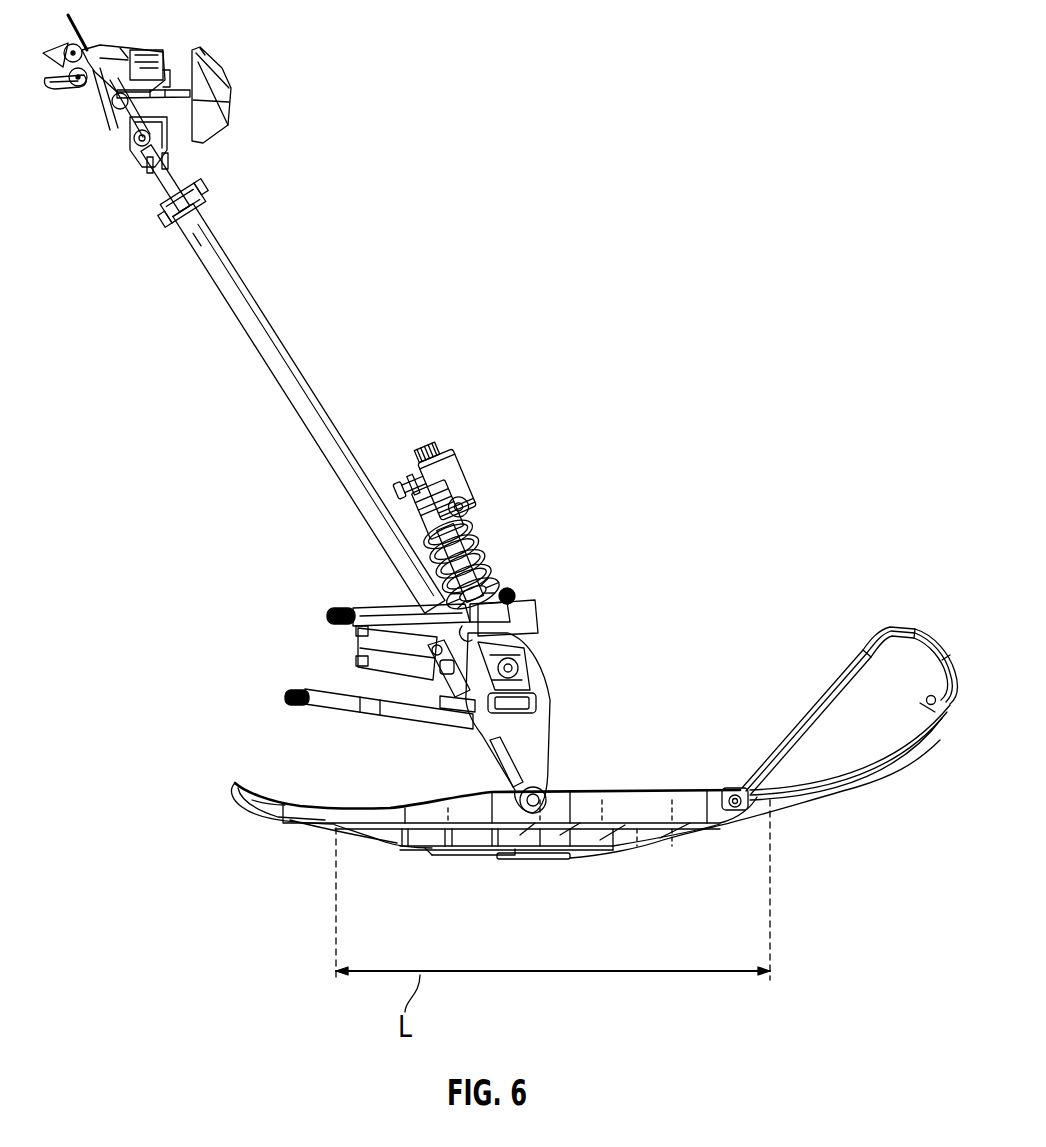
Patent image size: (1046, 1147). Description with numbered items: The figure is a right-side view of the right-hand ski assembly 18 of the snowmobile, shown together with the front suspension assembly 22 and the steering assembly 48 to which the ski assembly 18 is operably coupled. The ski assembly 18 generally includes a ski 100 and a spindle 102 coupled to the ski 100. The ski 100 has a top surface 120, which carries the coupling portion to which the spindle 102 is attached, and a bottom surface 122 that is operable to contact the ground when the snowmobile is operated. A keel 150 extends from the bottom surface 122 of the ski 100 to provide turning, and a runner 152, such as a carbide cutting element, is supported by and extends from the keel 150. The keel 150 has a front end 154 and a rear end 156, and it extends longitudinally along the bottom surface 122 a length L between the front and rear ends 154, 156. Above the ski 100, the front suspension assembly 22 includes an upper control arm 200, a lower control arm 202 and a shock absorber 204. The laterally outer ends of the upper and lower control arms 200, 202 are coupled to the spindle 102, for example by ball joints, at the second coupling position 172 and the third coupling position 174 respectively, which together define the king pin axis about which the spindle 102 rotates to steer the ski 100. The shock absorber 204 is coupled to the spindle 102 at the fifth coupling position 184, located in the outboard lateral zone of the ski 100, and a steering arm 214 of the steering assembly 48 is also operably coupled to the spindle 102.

The ski assembly 18 is at (586, 782).
The front suspension assembly 22 is at (458, 625).
The steering assembly 48 is at (282, 118).
The ski 100 is at (577, 823).
The spindle 102 is at (545, 688).
The top surface 120 is at (255, 782).
The bottom surface 122 is at (308, 845).
The keel 150 is at (392, 840).
The runner 152 is at (575, 858).
The front end 154 is at (652, 865).
The rear end 156 is at (430, 870).
The second coupling position 172 is at (518, 596).
The third coupling position 174 is at (530, 688).
The fifth coupling position 184 is at (513, 658).
The upper control arm 200 is at (415, 601).
The lower control arm 202 is at (372, 705).
The shock absorber 204 is at (453, 472).
The steering arm 214 is at (415, 680).